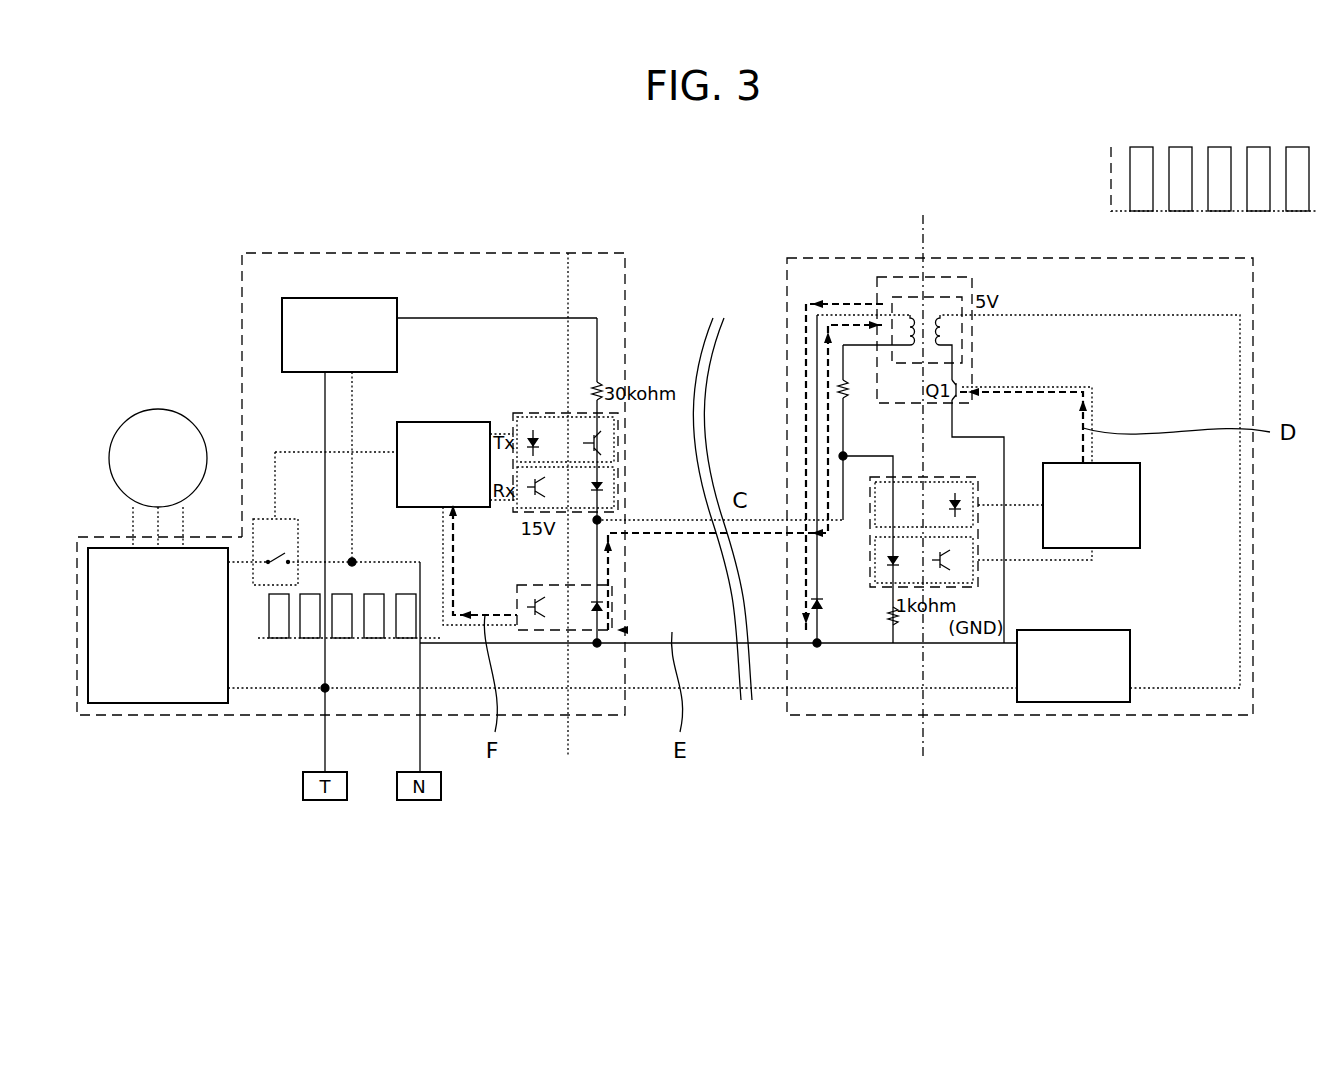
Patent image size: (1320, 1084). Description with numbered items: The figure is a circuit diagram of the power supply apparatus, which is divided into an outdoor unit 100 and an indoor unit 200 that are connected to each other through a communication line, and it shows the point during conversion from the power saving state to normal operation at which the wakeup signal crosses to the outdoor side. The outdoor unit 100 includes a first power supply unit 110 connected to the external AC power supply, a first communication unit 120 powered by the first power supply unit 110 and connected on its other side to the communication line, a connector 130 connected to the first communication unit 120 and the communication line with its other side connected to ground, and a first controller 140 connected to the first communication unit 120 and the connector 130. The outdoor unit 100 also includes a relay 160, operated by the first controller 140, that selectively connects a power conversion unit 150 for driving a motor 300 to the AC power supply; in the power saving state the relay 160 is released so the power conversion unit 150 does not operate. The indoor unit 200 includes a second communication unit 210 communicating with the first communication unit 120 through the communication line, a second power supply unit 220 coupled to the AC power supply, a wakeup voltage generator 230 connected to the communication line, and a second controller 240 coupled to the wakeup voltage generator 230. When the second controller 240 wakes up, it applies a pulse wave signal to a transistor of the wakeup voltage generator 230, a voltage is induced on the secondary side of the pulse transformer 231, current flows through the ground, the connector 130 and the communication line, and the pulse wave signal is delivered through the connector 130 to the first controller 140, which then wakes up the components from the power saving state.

The outdoor unit 100 is at (402, 253).
The first power supply unit 110 is at (338, 298).
The first communication unit 120 is at (527, 413).
The connector 130 is at (583, 632).
The first controller 140 is at (440, 422).
The power conversion unit 150 is at (155, 703).
The relay 160 is at (265, 585).
The indoor unit 200 is at (1058, 258).
The second communication unit 210 is at (886, 587).
The second power supply unit 220 is at (1072, 702).
The wakeup voltage generator 230 is at (895, 277).
The pulse transformer 231 is at (950, 297).
The second controller 240 is at (1140, 490).
The motor 300 is at (158, 408).